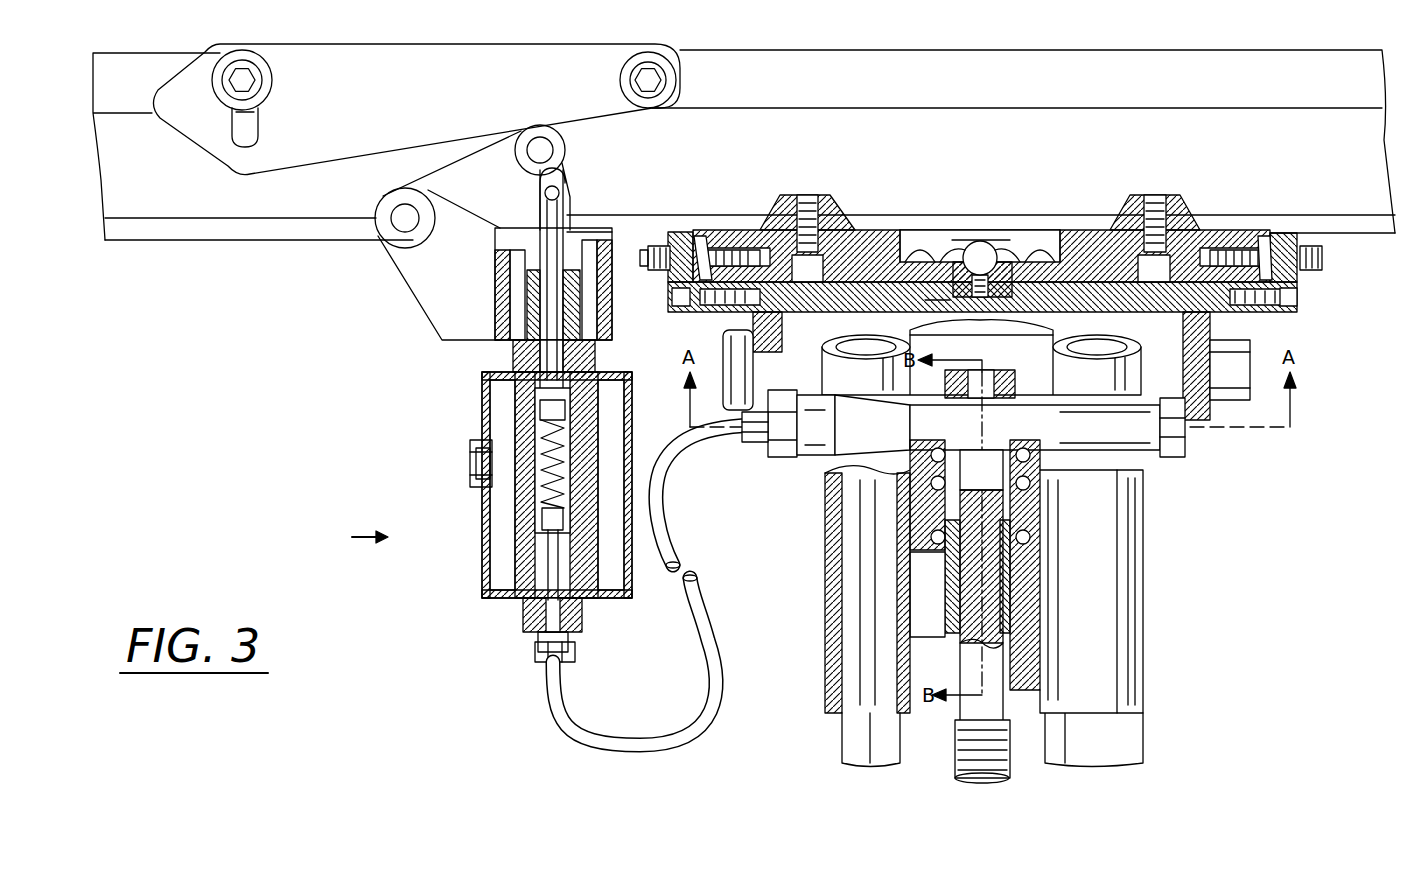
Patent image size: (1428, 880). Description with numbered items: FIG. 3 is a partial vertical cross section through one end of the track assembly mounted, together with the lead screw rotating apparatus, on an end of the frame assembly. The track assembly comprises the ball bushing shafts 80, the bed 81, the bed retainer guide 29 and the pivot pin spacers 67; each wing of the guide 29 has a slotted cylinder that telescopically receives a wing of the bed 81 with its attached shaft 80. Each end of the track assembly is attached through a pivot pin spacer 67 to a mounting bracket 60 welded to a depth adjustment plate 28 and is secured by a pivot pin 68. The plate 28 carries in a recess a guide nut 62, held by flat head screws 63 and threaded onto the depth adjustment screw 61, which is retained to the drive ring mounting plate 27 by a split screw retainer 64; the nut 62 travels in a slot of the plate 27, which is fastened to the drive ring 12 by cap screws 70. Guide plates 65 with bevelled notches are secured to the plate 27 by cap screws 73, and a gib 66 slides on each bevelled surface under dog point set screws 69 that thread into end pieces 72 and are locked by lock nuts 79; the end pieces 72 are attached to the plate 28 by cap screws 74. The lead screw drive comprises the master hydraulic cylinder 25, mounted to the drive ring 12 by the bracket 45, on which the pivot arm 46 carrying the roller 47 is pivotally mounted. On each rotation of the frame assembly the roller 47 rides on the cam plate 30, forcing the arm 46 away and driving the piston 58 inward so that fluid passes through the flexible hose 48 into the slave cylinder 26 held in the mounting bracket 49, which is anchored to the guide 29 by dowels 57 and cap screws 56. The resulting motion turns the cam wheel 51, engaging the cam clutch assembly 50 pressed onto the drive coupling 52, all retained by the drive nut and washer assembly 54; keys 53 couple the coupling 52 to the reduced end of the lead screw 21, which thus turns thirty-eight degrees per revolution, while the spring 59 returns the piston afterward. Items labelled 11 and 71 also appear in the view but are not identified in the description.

The rail 11 is at (922, 92).
The drive ring 12 is at (1000, 169).
The lead screw 21 is at (985, 715).
The master hydraulic cylinder 25 is at (354, 538).
The slave cylinder 26 is at (795, 419).
The drive ring mounting plate 27 is at (779, 254).
The depth adjustment plate 28 is at (830, 307).
The bed retainer guide 29 is at (862, 385).
The cam plate 30 is at (357, 104).
The bracket 45 is at (457, 289).
The pivot arm 46 is at (489, 197).
The roller 47 is at (553, 150).
The flexible fluid hose 48 is at (683, 473).
The mounting bracket 49 is at (1040, 520).
The cam clutch assembly 50 is at (1030, 483).
The cam wheel 51 is at (1030, 455).
The drive coupling 52 is at (1010, 560).
The keys 53 is at (1003, 578).
The drive nut and washer assembly 54 is at (945, 385).
The threaded cap screws 56 is at (1030, 537).
The dowels 57 is at (1030, 500).
The piston 58 is at (562, 282).
The spring 59 is at (552, 494).
The mounting bracket 60 is at (778, 336).
The depth adjustment screw 61 is at (997, 255).
The guide nut 62 is at (1012, 290).
The flat head screws 63 is at (924, 295).
The split adjustment screw retainer 64 is at (965, 252).
The guide plates 65 is at (700, 250).
The gibs 66 is at (700, 240).
The pivot pin spacers 67 is at (885, 332).
The pivot pins 68 is at (764, 383).
The threaded dog point socket head set screws 69 is at (648, 265).
The threaded cap screws 70 is at (818, 279).
The block 71 is at (1240, 381).
The end pieces 72 is at (668, 290).
The threaded cap screws 73 is at (740, 250).
The threaded cap screws 74 is at (672, 300).
The lock nuts 79 is at (640, 256).
The ball bushing shafts 80 is at (868, 639).
The bed 81 is at (1033, 715).